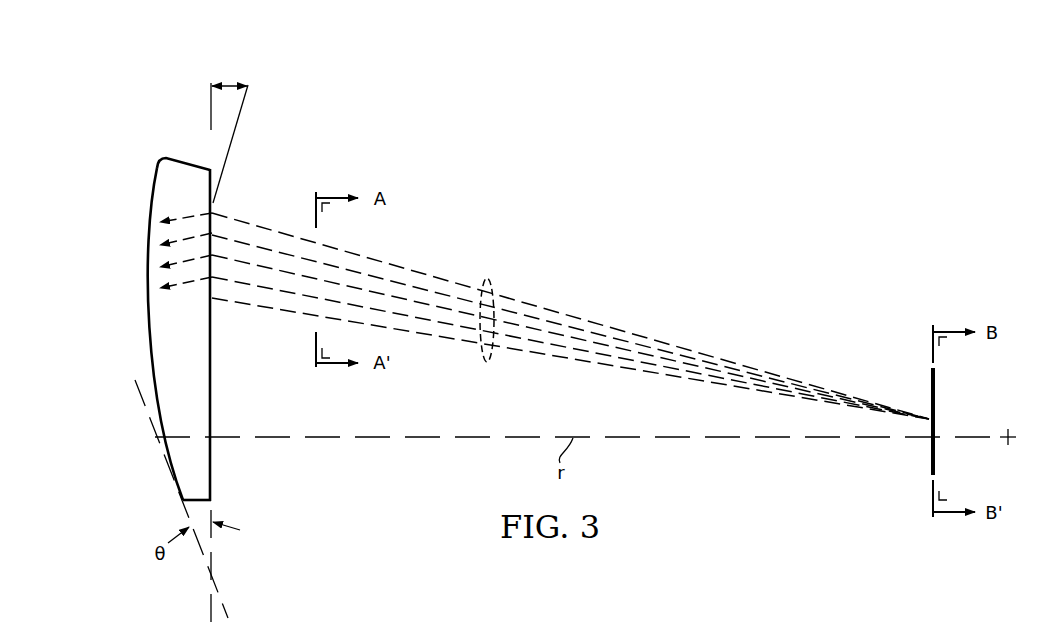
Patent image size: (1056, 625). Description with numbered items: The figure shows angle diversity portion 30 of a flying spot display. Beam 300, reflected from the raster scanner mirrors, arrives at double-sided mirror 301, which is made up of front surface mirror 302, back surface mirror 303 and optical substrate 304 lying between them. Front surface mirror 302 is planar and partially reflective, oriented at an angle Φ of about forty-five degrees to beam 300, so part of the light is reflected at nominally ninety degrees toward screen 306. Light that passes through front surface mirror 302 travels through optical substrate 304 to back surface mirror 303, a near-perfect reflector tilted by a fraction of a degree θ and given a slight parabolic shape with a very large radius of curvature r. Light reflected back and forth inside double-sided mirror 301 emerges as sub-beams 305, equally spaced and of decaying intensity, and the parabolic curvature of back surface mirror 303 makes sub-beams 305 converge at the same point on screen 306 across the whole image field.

The angle diversity portion 30 is at (650, 196).
The beam 300 is at (224, 205).
The double-sided mirror 301 is at (225, 143).
The front surface mirror 302 is at (212, 402).
The back surface mirror 303 is at (148, 255).
The optical substrate 304 is at (162, 177).
The sub-beams 305 is at (485, 277).
The screen 306 is at (930, 453).